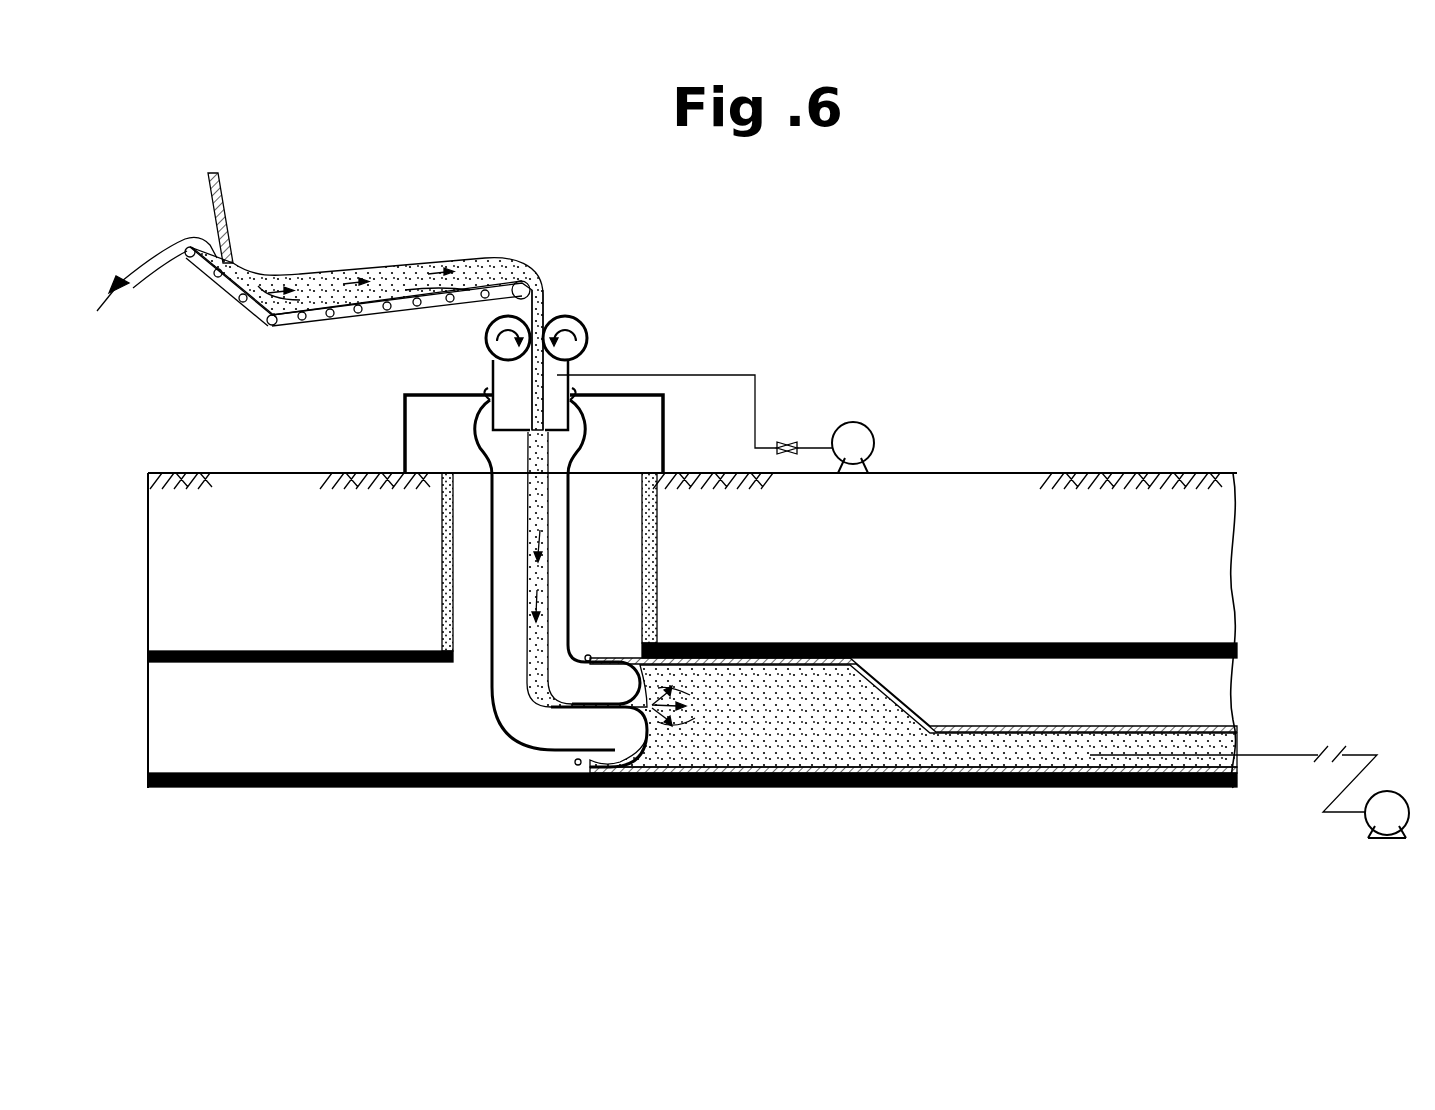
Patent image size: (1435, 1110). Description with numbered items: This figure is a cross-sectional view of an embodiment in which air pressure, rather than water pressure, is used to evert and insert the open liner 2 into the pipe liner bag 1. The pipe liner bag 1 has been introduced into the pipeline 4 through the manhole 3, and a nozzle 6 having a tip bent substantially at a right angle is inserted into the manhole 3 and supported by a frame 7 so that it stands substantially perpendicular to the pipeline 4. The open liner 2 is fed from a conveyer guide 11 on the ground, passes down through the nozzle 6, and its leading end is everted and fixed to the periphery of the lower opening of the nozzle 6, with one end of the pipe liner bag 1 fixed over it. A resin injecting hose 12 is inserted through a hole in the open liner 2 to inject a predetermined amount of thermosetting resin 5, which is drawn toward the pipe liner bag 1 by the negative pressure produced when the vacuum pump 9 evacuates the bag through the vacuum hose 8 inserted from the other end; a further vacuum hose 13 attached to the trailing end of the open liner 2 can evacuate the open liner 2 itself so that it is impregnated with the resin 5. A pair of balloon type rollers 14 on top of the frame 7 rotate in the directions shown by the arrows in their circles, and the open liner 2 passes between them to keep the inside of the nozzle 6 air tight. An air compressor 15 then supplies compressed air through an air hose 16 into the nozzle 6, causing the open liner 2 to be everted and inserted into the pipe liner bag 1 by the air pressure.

The pipe liner bag 1 is at (917, 717).
The open liner 2 is at (488, 267).
The manhole 3 is at (597, 503).
The pipeline 4 is at (1072, 658).
The resin 5 is at (385, 273).
The nozzle 6 is at (497, 700).
The frame 7 is at (665, 442).
The vacuum hose 8 is at (1262, 755).
The vacuum pump 9 is at (1388, 792).
The conveyer guide 11 is at (288, 330).
The resin injecting hose 12 is at (227, 217).
The vacuum hose 13 is at (112, 284).
The balloon type rollers 14 is at (486, 340).
The air compressor 15 is at (862, 423).
The air hose 16 is at (710, 375).